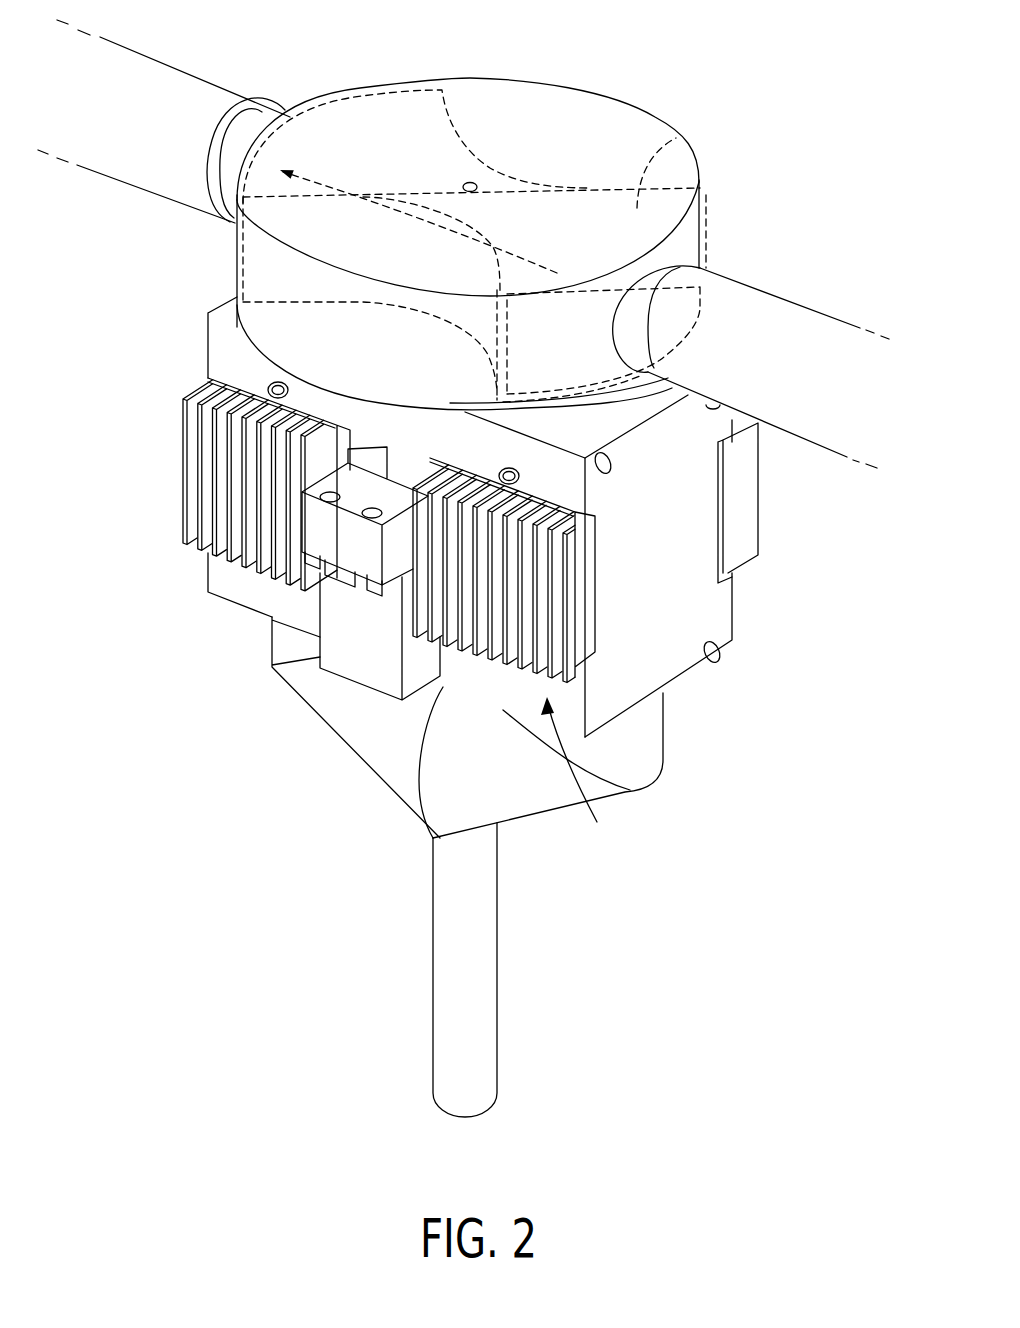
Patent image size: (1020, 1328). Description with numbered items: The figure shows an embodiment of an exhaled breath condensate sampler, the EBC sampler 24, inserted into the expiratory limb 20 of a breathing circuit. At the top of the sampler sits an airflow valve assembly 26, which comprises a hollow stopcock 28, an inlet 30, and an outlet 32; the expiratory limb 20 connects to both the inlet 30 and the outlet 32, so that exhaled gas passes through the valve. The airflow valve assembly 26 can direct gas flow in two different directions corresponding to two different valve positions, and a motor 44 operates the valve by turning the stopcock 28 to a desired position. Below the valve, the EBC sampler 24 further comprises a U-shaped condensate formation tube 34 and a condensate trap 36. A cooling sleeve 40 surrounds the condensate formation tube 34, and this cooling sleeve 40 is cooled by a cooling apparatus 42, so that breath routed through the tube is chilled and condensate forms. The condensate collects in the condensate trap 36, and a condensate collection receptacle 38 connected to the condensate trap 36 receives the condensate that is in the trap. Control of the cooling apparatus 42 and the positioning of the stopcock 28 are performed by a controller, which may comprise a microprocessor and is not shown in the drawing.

The expiratory limb 20 is at (158, 87).
The EBC sampler 24 is at (787, 197).
The airflow valve assembly 26 is at (543, 125).
The stopcock 28 is at (676, 138).
The inlet 30 is at (668, 272).
The outlet 32 is at (246, 140).
The condensate formation tube 34 is at (648, 740).
The condensate trap 36 is at (513, 800).
The condensate collection receptacle 38 is at (478, 1007).
The cooling sleeve 40 is at (576, 775).
The cooling apparatus 42 is at (487, 663).
The motor 44 is at (360, 687).